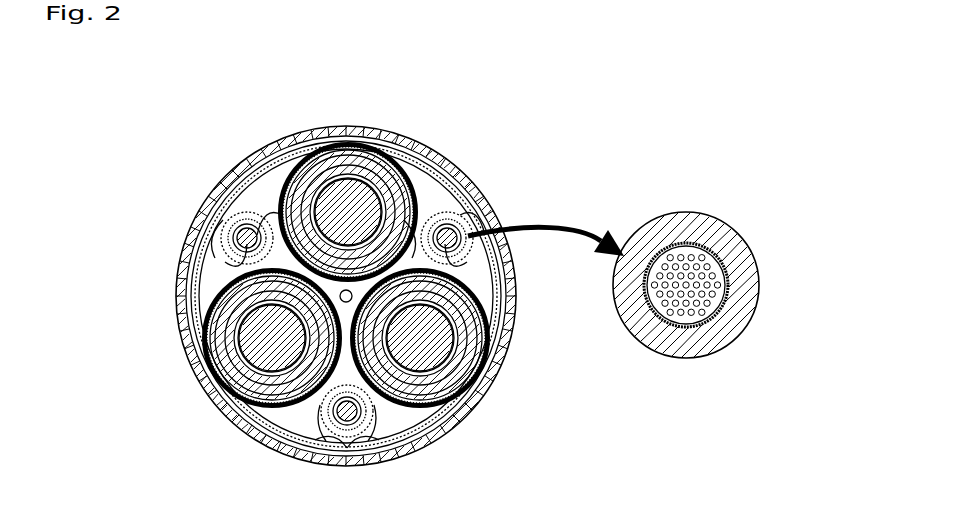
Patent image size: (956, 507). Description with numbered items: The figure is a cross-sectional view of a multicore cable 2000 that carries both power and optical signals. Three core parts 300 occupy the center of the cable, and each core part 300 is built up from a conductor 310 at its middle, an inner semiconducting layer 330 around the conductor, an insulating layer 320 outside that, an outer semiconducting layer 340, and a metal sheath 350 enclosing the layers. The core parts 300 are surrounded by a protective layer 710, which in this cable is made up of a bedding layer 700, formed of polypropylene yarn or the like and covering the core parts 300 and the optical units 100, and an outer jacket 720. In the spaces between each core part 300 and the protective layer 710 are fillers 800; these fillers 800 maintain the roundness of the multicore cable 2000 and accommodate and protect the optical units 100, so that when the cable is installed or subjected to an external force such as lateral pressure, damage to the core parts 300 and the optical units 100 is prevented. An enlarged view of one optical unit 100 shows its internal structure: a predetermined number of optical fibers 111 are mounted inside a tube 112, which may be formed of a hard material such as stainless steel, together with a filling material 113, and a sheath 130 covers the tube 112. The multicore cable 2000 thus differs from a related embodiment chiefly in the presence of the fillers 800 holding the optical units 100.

The multicore cable 2000 is at (262, 125).
The core part 300 is at (293, 160).
The conductor 310 is at (368, 145).
The insulating layer 320 is at (412, 150).
The inner semiconducting layer 330 is at (432, 158).
The outer semiconducting layer 340 is at (452, 170).
The metal sheath 350 is at (475, 197).
The optical unit 100 is at (222, 223).
The optical fiber 111 is at (657, 252).
The tube 112 is at (677, 243).
The filling material 113 is at (705, 243).
The sheath 130 is at (731, 220).
The filler 800 is at (190, 258).
The bedding layer 700 is at (505, 328).
The jacket 720 is at (503, 360).
The protective layer 710 is at (446, 296).